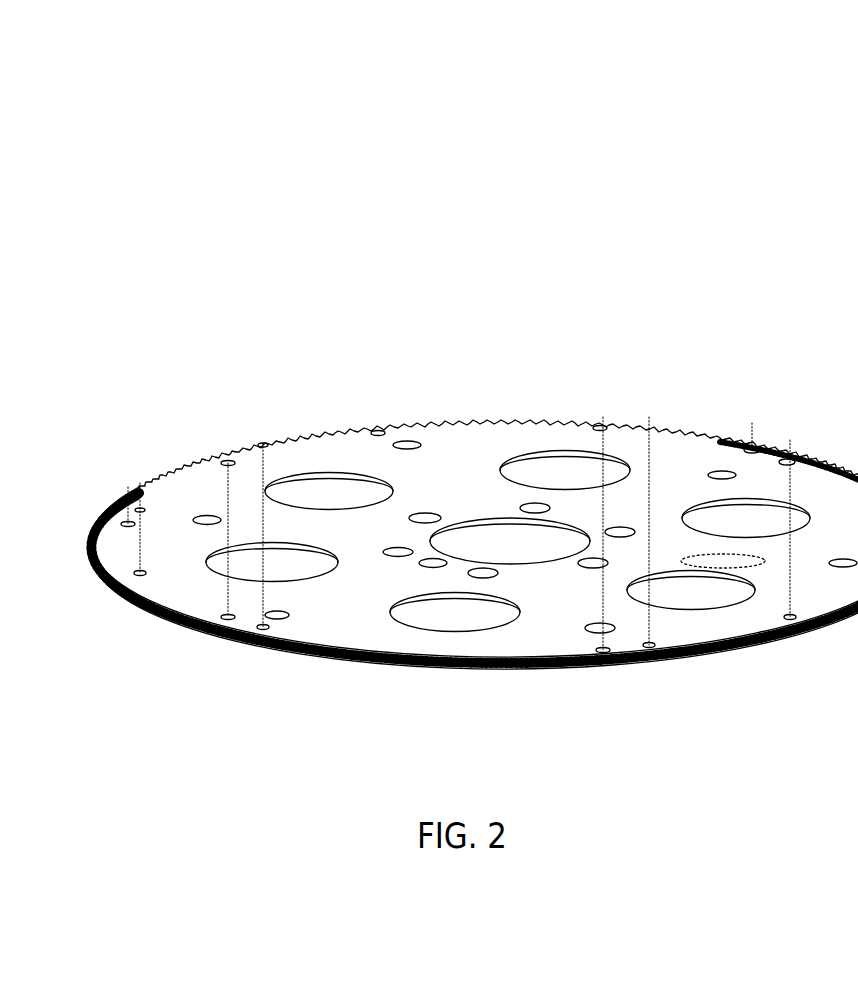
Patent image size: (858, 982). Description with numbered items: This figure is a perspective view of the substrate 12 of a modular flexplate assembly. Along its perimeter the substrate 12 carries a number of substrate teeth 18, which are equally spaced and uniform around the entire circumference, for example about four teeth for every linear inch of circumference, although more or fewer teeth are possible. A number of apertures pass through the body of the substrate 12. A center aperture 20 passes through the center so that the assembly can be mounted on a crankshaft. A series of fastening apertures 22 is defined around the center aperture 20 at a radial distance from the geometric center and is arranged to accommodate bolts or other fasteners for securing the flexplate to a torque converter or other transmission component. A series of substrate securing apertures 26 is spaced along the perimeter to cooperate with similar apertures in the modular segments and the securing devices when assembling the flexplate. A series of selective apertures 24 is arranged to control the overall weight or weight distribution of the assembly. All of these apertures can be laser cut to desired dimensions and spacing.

The substrate 12 is at (298, 147).
The substrate teeth 18 is at (781, 634).
The center aperture 20 is at (500, 545).
The fastening apertures 22 is at (207, 517).
The selective apertures 24 is at (563, 470).
The substrate securing apertures 26 is at (423, 660).